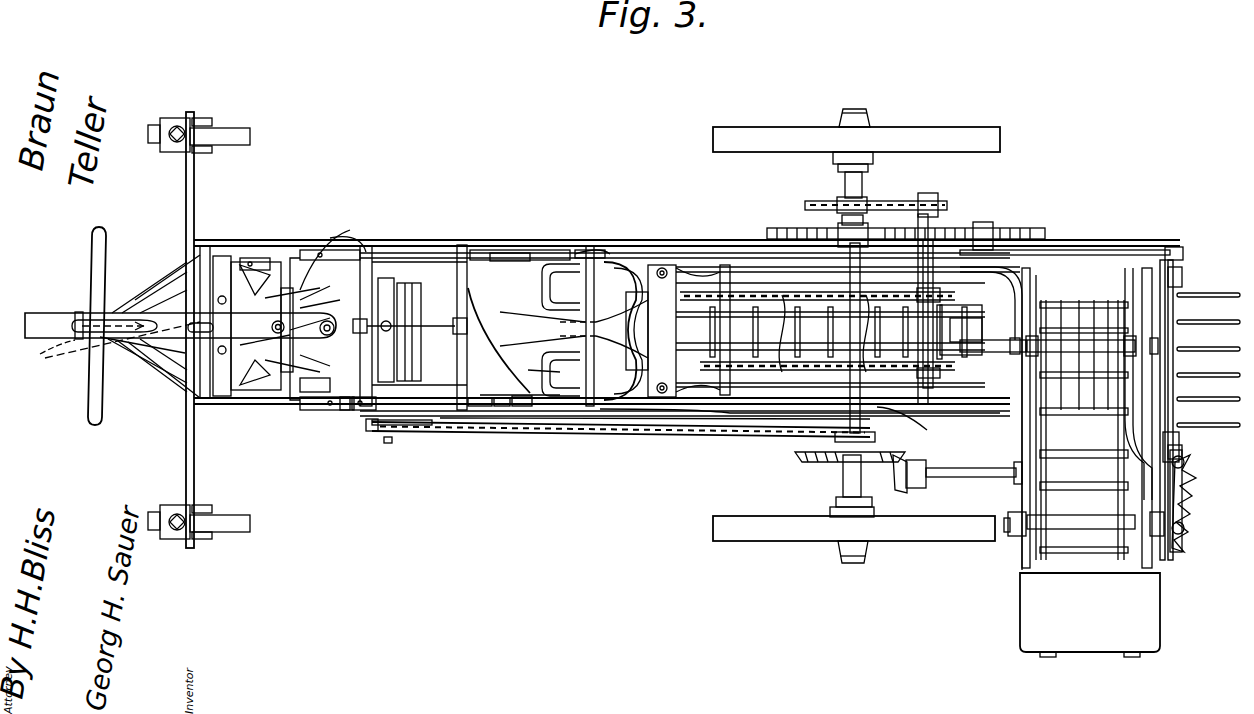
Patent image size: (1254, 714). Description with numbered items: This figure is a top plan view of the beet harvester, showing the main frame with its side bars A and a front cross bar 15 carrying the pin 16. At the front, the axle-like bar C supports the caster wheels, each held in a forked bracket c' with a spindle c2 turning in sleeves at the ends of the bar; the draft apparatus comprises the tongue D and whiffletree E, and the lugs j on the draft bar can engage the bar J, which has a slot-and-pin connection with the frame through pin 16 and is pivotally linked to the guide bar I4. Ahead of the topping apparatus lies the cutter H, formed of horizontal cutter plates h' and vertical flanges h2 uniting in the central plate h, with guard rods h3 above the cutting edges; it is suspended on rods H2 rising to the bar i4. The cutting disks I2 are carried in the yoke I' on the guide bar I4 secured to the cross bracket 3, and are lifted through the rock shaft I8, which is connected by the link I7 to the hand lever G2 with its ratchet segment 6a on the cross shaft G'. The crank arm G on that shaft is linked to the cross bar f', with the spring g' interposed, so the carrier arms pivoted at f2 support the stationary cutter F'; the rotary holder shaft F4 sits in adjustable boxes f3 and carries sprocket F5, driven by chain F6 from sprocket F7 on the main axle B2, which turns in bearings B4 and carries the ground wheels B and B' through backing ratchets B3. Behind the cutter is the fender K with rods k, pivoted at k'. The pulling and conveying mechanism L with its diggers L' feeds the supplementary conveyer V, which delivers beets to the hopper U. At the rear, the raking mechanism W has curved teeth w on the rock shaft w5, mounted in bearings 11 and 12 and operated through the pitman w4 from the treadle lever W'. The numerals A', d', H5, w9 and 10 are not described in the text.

The axle-like bar C is at (196, 222).
The spindle c2 is at (180, 124).
The forked bracket c' is at (211, 330).
The bracket arm d' is at (225, 310).
The tongue D is at (40, 312).
The ears or lugs j is at (78, 313).
The bar J is at (261, 327).
The central longitudinally arranged plate h is at (44, 352).
The vertical flanges h2 is at (75, 355).
The whiffletree E is at (97, 268).
The horizontal cutter plates h' is at (147, 329).
The guard rods or fingers h3 is at (172, 292).
The pin 16 is at (150, 300).
The front cross bar 15 is at (187, 375).
The cutter H is at (150, 352).
The side bars A is at (687, 318).
The frame cross bar A' is at (330, 347).
The suspension rods H2 is at (255, 290).
The pivot f2 is at (245, 258).
The cross bracket 3 is at (286, 296).
The cutting disks I2 is at (316, 321).
The guide bar I4 is at (311, 316).
The bar i4 is at (265, 355).
The fork or yoke I' is at (320, 296).
The cross bar f' is at (311, 384).
The stationary cutter F' is at (334, 331).
The rock shaft I8 is at (342, 228).
The pivot k' is at (329, 230).
The spring g' is at (399, 330).
The adjustable boxes f3 is at (410, 323).
The lever or crank arm G is at (449, 327).
The link I7 is at (470, 250).
The ratchet segment 6a is at (478, 248).
The hand-lever G2 is at (552, 250).
The fender rods k is at (499, 340).
The deflector or fender K is at (520, 386).
The cross shaft G' is at (489, 386).
The clamp 10 is at (522, 394).
The treadle lever W' is at (546, 330).
The pointed diggers and lifters L' is at (546, 315).
The rod w9 is at (536, 366).
The pulling and conveying mechanism L is at (653, 326).
The drive chain F6 is at (566, 432).
The sprocket F7 is at (800, 428).
The shaft F4 is at (385, 432).
The sprocket wheel F5 is at (372, 432).
The main ground wheel B is at (856, 129).
The backing ratchet devices B3 is at (836, 160).
The bearings B4 is at (838, 232).
The axle B2 is at (845, 462).
The main ground wheel B' is at (854, 547).
The supplementary conveyer V is at (920, 405).
The hopper U is at (1090, 615).
The pitman or link w4 is at (1073, 252).
The rock shaft w5 is at (1172, 366).
The bearing 11 is at (1182, 276).
The raking mechanism W is at (1208, 360).
The bearing 12 is at (1182, 446).
The curved rake teeth w is at (1228, 460).
The bracket H5 is at (372, 426).